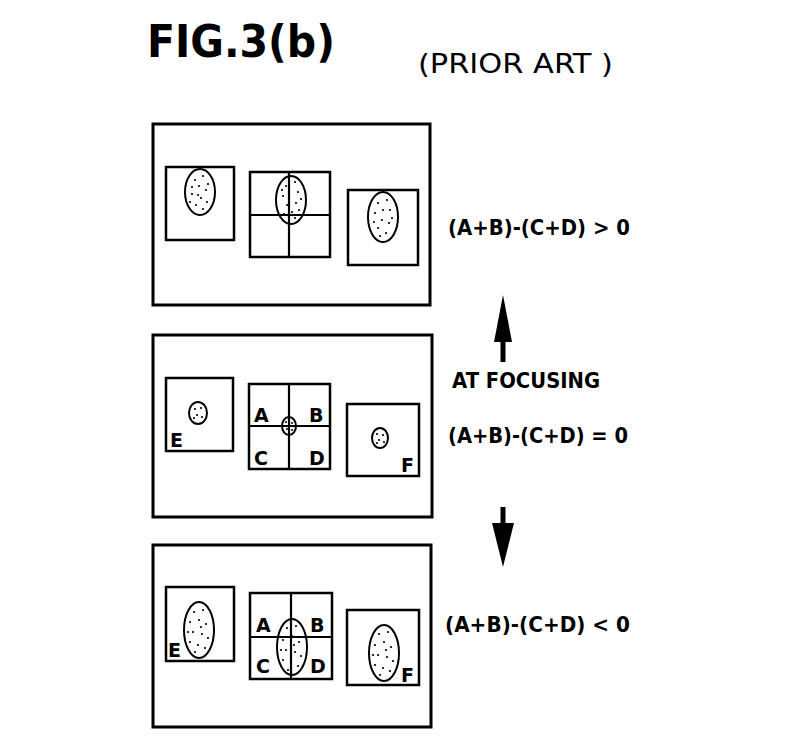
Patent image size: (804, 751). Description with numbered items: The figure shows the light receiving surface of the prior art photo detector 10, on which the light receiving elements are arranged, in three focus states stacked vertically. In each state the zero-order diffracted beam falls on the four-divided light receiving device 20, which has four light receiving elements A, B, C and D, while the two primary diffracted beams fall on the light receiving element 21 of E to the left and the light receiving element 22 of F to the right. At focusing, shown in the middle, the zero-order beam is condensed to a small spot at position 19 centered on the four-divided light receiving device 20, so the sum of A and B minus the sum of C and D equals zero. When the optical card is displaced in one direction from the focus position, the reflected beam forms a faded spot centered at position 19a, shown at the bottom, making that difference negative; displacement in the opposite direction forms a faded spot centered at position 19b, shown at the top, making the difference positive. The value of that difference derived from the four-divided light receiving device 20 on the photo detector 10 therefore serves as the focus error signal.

The photo detector 10 is at (153, 250).
The spot position at focusing 19 is at (290, 417).
The faded spot position (card displaced in direction a) 19a is at (292, 672).
The faded spot position (card displaced in direction b) 19b is at (283, 183).
The four-divided light receiving device 20 is at (327, 172).
The light receiving element E 21 is at (178, 167).
The light receiving element F 22 is at (405, 188).